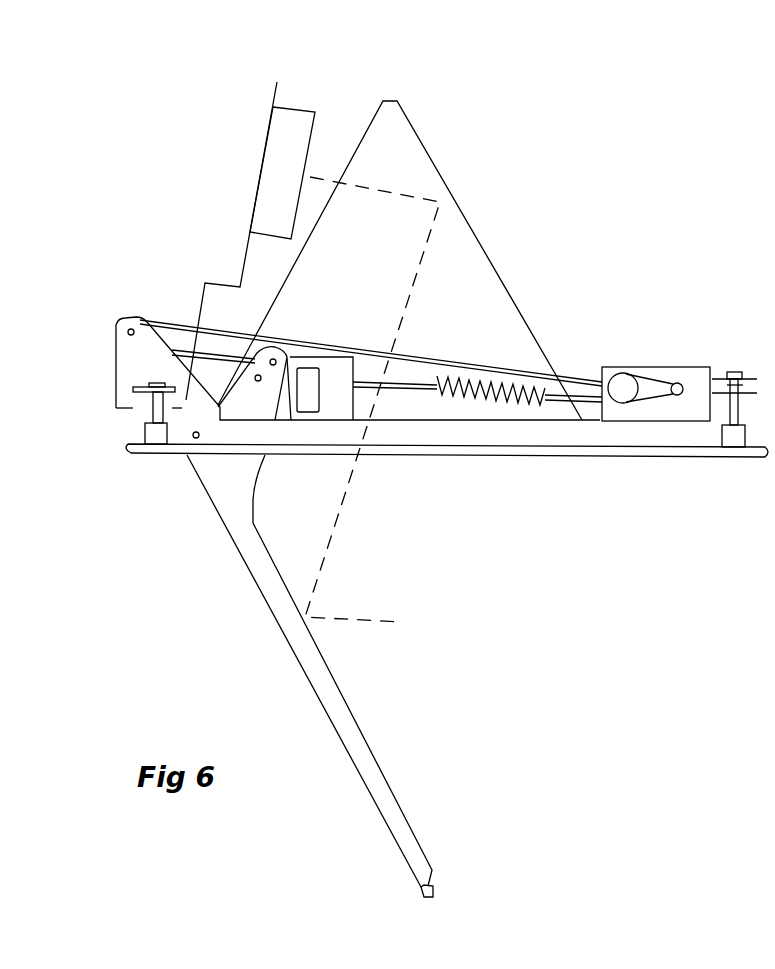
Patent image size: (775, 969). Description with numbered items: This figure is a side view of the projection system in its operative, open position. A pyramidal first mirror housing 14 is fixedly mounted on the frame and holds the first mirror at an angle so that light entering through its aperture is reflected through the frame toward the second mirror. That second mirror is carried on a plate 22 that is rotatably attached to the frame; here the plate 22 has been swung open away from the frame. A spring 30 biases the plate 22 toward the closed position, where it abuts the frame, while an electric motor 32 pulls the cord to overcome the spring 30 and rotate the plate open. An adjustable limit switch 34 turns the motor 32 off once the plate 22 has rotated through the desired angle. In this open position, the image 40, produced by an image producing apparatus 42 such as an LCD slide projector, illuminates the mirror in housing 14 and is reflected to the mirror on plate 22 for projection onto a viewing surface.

The first mirror housing 14 is at (478, 267).
The plate 22 is at (373, 783).
The spring 30 is at (505, 383).
The electric motor 32 is at (678, 396).
The adjustable limit switch 34 is at (308, 405).
The image 40 is at (348, 528).
The image producing apparatus 42 is at (290, 125).